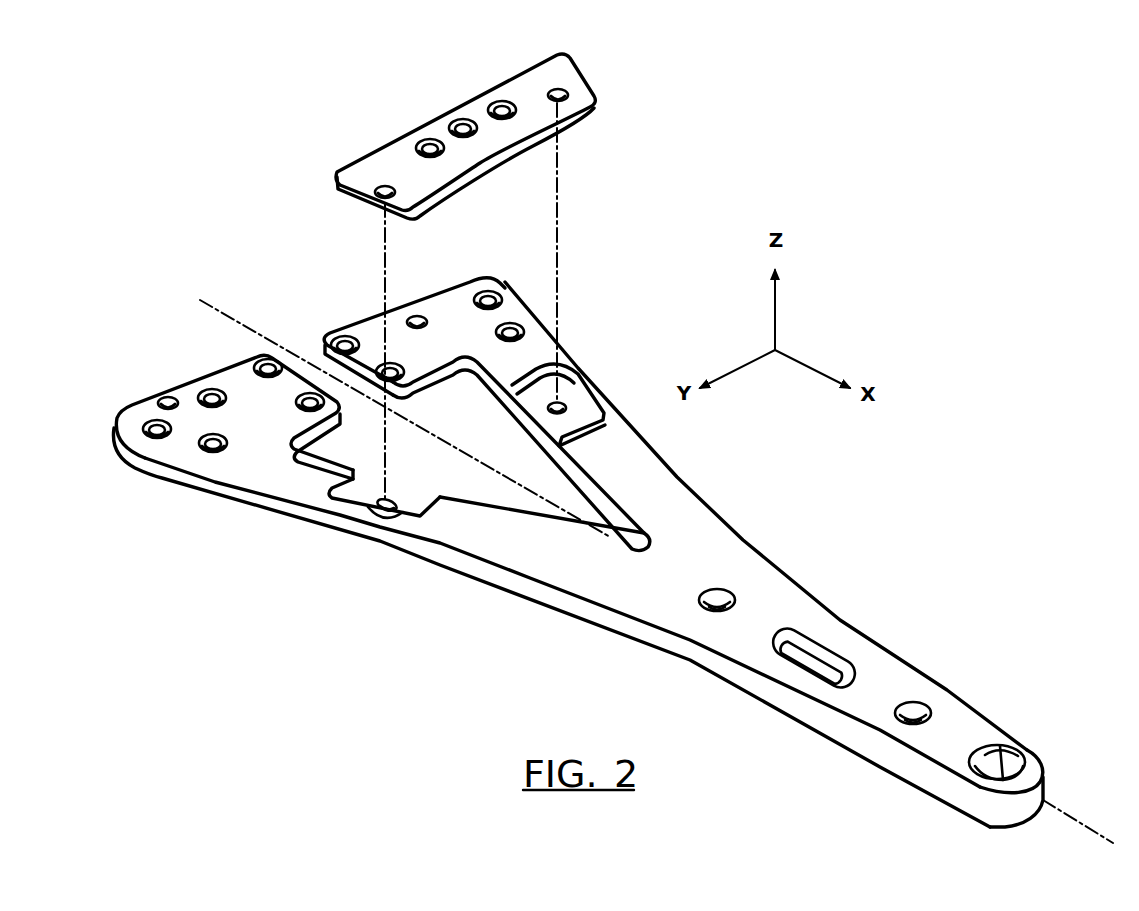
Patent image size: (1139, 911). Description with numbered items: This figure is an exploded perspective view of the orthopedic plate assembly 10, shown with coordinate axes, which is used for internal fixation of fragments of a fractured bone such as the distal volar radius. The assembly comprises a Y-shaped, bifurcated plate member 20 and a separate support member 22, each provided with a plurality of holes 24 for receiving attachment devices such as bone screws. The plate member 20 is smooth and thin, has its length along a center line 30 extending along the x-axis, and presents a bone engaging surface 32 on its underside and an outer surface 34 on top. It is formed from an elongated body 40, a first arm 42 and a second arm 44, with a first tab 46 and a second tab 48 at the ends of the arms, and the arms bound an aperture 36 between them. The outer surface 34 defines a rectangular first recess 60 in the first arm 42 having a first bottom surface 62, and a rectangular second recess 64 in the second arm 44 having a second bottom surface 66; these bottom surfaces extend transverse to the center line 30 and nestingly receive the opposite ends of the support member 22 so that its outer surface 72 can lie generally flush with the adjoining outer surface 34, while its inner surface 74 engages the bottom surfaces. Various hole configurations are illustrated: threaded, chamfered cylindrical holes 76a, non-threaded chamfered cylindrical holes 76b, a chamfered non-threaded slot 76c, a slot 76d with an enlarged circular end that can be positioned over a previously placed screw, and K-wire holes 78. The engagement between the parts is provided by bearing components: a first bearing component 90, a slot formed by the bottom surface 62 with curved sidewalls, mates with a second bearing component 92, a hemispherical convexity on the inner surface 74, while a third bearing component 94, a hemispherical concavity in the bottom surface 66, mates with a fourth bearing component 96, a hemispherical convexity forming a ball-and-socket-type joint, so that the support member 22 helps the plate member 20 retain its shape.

The orthopedic plate assembly 10 is at (142, 182).
The plate member 20 is at (578, 554).
The support member 22 is at (437, 136).
The holes 24 is at (523, 380).
The center line 30 is at (1068, 755).
The bone engaging surface 32 is at (600, 636).
The outer surface 34 is at (809, 580).
The aperture 36 is at (408, 481).
The elongated body 40 is at (879, 628).
The first arm 42 is at (534, 583).
The second arm 44 is at (676, 471).
The first tab 46 is at (234, 379).
The second tab 48 is at (414, 319).
The first recess 60 is at (384, 541).
The first bottom surface 62 is at (379, 546).
The second recess 64 is at (623, 413).
The second bottom surface 66 is at (601, 384).
The outer surface 72 is at (516, 63).
The inner surface 74 is at (606, 126).
The bone screw holes 76a is at (344, 300).
The bone screw holes 76b is at (797, 706).
The bone screw hole 76c is at (814, 697).
The bone screw hole 76d is at (984, 810).
The K-wire holes 78 is at (292, 324).
The first bearing component 90 is at (359, 542).
The second bearing component 92 is at (340, 204).
The third bearing component 94 is at (521, 425).
The fourth bearing component 96 is at (601, 83).